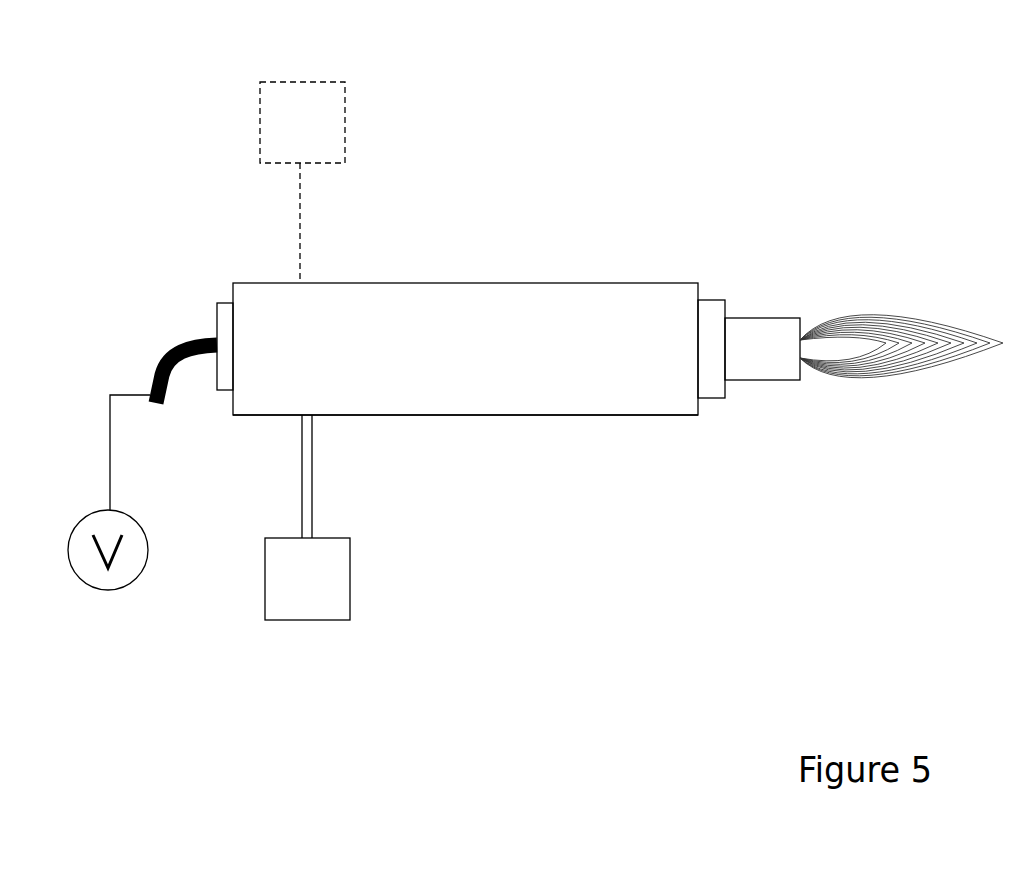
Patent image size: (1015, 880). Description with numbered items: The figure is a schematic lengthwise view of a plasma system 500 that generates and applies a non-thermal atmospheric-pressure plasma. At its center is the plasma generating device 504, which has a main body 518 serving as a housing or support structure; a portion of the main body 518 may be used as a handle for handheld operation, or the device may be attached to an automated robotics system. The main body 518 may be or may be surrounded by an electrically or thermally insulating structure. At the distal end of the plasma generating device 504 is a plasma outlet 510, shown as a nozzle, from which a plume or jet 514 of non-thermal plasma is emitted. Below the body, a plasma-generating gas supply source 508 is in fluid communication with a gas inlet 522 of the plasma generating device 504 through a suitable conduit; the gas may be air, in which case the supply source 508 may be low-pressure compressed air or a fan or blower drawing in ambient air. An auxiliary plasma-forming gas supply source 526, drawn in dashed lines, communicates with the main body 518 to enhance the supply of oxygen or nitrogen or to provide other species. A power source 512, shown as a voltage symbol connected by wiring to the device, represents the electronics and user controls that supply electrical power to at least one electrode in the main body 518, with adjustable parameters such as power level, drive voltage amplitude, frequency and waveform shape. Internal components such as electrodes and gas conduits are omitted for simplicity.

The plasma system 500 is at (661, 84).
The plasma generating device 504 is at (511, 250).
The plasma-generating gas supply source 508 is at (305, 620).
The plasma outlet 510 is at (763, 318).
The power source 512 is at (92, 590).
The plume or jet 514 is at (912, 316).
The main body 518 is at (578, 415).
The gas inlet 522 is at (312, 457).
The auxiliary plasma-forming gas supply source 526 is at (260, 123).